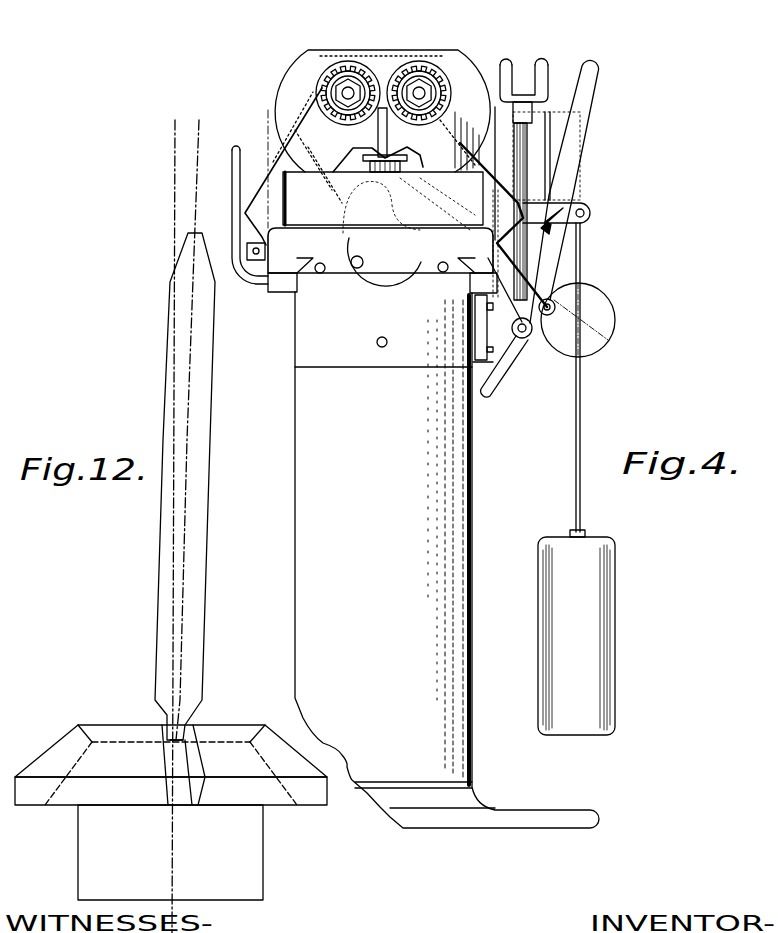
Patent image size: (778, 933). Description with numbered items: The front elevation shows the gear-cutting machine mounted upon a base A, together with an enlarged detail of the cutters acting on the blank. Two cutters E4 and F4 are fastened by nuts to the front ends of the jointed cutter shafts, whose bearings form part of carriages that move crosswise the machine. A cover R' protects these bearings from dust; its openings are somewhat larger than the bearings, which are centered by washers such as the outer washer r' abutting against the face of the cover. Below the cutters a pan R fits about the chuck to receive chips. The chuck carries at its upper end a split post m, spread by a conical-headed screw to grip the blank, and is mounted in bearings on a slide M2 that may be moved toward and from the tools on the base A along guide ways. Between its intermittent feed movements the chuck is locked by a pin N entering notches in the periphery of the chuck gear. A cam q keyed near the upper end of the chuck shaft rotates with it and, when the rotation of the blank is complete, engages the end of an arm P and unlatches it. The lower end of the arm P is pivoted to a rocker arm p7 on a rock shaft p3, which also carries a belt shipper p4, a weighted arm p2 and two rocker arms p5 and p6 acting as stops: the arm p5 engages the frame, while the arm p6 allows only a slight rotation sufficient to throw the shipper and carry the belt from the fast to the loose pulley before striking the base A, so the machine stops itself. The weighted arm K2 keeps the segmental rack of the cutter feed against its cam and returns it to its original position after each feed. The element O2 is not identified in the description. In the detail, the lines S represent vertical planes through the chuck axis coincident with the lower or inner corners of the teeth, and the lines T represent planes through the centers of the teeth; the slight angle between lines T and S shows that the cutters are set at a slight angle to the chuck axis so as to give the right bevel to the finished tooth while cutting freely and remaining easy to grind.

In FIG. 4, the cutter E4 is at (339, 70).
In FIG. 4, the cover R' is at (379, 122).
In FIG. 4, the cutter F4 is at (413, 66).
In FIG. 12, the cutter F4 is at (208, 546).
In FIG. 4, the outer washer r' is at (395, 77).
In FIG. 4, the belt shipper p4 is at (543, 68).
In FIG. 4, the weighted arm K2 is at (592, 213).
In FIG. 4, the arm P is at (513, 262).
In FIG. 4, the weighted arm p2 is at (607, 330).
In FIG. 4, the rocker arm p7 is at (528, 340).
In FIG. 4, the rocker arm p6 is at (493, 392).
In FIG. 4, the rocker arm p5 is at (480, 303).
In FIG. 4, the rock shaft p3 is at (497, 328).
In FIG. 4, the base A is at (338, 670).
In FIG. 4, the slide M2 is at (382, 260).
In FIG. 4, the pan R is at (383, 202).
In FIG. 4, the cam q is at (350, 147).
In FIG. 4, the split post m is at (385, 140).
In FIG. 4, the pin N is at (247, 254).
In FIG. 4, the guide rod O2 is at (233, 190).
In FIG. 12, the lines S— S is at (175, 142).
In FIG. 12, the lines T— T is at (199, 126).